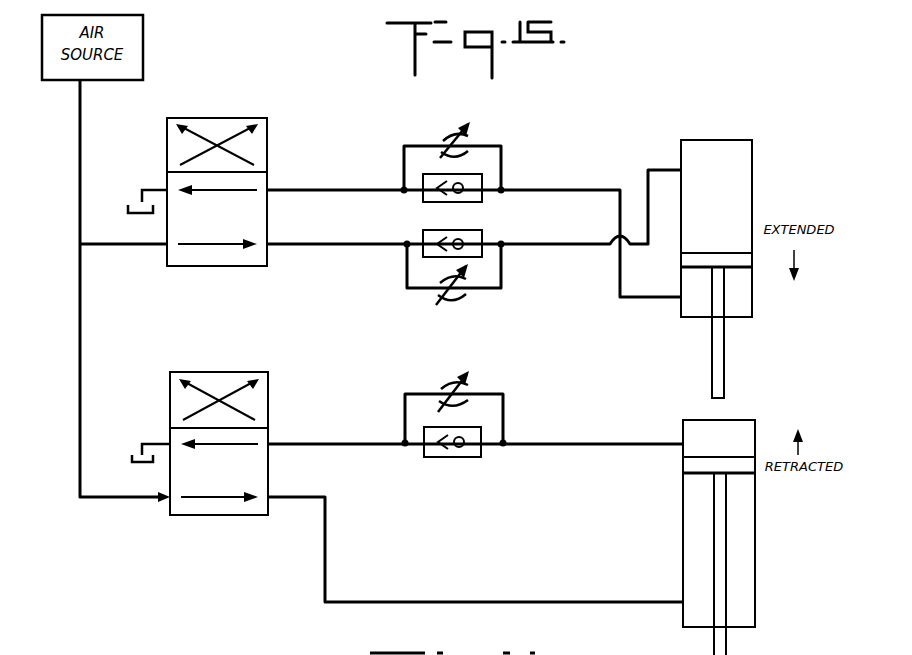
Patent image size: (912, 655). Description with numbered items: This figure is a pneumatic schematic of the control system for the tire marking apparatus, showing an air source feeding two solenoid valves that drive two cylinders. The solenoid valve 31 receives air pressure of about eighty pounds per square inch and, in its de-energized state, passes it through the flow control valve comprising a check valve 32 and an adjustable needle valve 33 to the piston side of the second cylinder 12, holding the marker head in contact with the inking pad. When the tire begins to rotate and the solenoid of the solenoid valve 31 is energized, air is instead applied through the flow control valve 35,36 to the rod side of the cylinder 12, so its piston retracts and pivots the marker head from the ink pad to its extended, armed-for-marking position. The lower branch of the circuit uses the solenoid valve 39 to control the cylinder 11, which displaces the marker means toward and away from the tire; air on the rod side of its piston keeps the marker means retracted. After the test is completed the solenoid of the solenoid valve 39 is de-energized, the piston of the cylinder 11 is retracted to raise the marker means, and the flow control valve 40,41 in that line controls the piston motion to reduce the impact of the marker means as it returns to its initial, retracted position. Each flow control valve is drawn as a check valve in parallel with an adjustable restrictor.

The cylinder 11 is at (683, 525).
The second cylinder 12 is at (752, 190).
The solenoid valve 31 is at (167, 266).
The check valve 32 is at (423, 232).
The adjustable needle valve 33 is at (468, 296).
The flow control valve 35 is at (482, 200).
The flow control valve 36 is at (470, 140).
The solenoid valve 39 is at (268, 465).
The flow control valve 40 is at (445, 385).
The flow control valve 41 is at (464, 457).